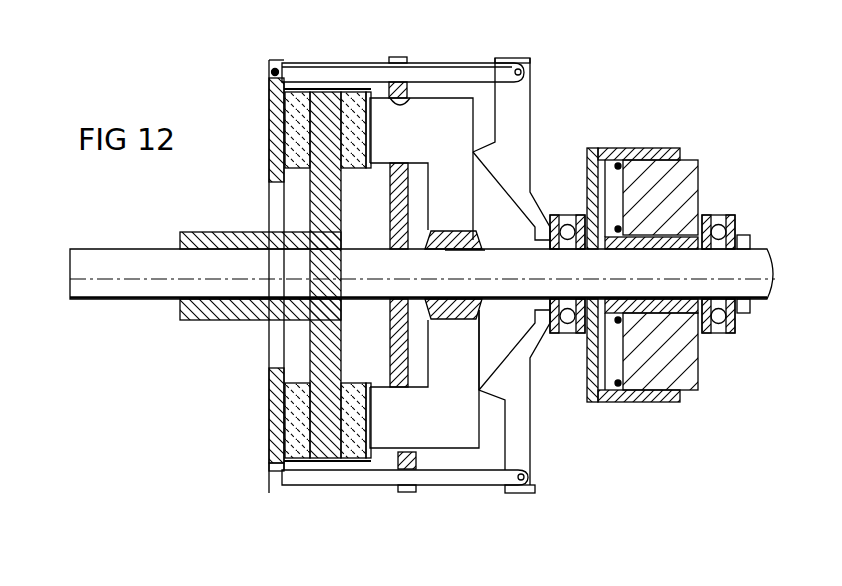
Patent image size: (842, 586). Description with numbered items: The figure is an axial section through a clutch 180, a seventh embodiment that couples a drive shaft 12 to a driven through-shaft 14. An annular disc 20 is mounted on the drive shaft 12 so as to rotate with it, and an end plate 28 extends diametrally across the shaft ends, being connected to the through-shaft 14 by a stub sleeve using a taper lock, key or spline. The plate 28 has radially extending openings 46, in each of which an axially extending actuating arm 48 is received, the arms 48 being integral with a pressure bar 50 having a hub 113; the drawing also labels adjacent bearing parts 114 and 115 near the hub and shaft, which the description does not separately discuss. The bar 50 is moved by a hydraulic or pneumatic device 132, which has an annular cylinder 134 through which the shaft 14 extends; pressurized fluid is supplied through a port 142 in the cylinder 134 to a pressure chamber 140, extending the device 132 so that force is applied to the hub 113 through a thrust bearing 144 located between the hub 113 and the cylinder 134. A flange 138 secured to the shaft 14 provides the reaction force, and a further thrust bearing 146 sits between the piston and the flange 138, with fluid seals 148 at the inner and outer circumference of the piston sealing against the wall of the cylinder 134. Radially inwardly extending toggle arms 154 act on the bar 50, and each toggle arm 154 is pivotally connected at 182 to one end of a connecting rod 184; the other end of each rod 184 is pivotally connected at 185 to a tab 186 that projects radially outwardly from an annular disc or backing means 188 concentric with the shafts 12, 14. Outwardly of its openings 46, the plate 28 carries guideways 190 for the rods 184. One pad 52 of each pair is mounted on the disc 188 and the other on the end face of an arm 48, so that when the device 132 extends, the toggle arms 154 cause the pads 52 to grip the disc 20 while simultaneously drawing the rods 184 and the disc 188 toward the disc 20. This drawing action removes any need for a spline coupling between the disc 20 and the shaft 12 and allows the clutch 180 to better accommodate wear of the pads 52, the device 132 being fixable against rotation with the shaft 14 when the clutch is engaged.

The drive shaft 12 is at (208, 237).
The driven shaft 14 is at (94, 262).
The annular disc 20 is at (326, 428).
The end plate 28 is at (403, 344).
The opening 46 is at (415, 103).
The actuating arm 48 is at (402, 147).
The pressure bar 50 is at (469, 185).
The pad 52 is at (290, 130).
The hub 113 is at (476, 231).
The lower bearing 114 is at (463, 337).
The shaft shoulder 115 is at (459, 252).
The hydraulic or pneumatic device 132 is at (657, 125).
The annular cylinder 134 is at (657, 392).
The flange 138 is at (738, 236).
The pressure chamber 140 is at (601, 172).
The port 142 is at (601, 400).
The thrust bearing 144 is at (555, 334).
The thrust bearing 146 is at (742, 315).
The fluid seal 148 is at (615, 168).
The toggle arm 154 is at (514, 115).
The clutch 180 is at (177, 371).
The pivotal connection 182 is at (524, 70).
The connecting rod 184 is at (483, 70).
The pivotal connection 185 is at (286, 478).
The tab 186 is at (270, 68).
The annular disc or backing means 188 is at (281, 421).
The guideway 190 is at (395, 57).